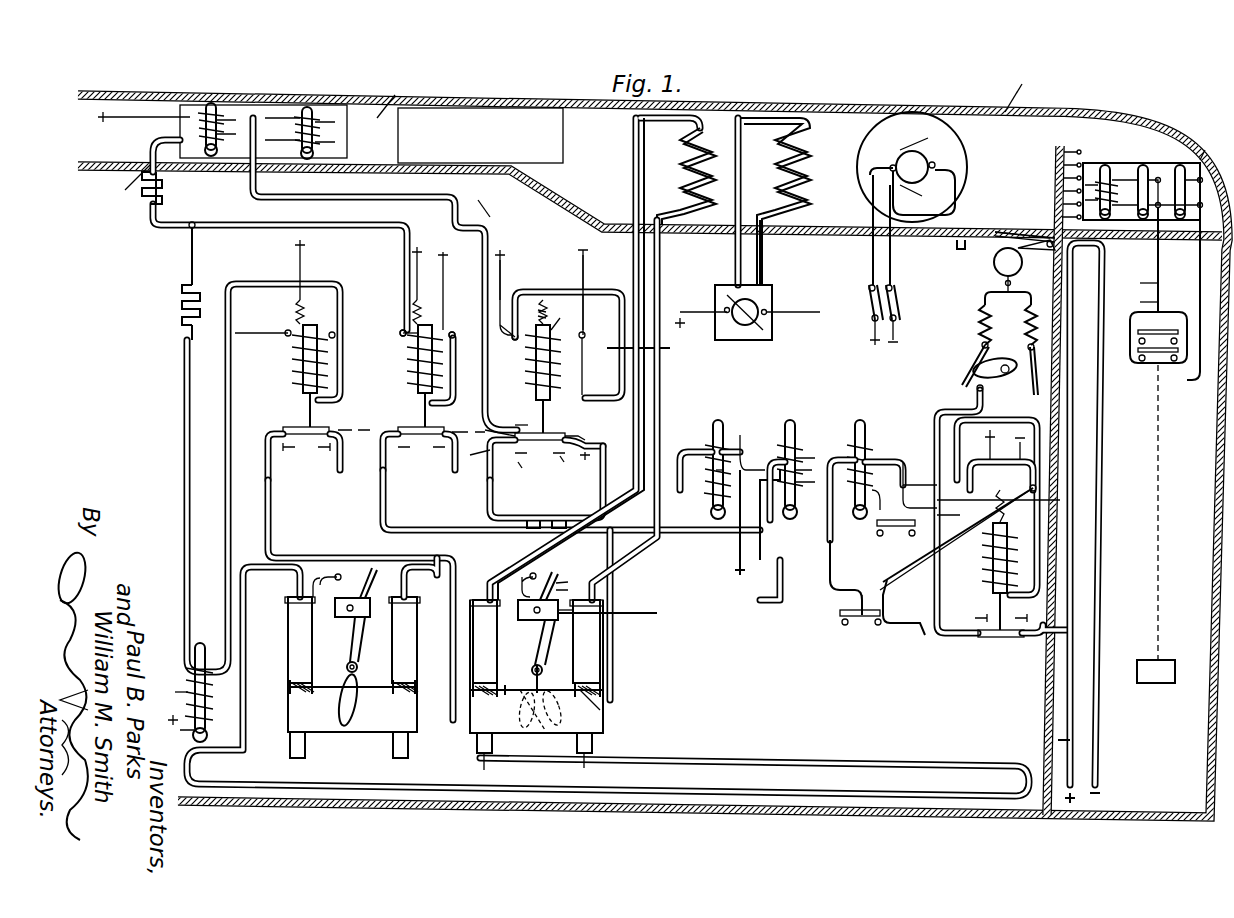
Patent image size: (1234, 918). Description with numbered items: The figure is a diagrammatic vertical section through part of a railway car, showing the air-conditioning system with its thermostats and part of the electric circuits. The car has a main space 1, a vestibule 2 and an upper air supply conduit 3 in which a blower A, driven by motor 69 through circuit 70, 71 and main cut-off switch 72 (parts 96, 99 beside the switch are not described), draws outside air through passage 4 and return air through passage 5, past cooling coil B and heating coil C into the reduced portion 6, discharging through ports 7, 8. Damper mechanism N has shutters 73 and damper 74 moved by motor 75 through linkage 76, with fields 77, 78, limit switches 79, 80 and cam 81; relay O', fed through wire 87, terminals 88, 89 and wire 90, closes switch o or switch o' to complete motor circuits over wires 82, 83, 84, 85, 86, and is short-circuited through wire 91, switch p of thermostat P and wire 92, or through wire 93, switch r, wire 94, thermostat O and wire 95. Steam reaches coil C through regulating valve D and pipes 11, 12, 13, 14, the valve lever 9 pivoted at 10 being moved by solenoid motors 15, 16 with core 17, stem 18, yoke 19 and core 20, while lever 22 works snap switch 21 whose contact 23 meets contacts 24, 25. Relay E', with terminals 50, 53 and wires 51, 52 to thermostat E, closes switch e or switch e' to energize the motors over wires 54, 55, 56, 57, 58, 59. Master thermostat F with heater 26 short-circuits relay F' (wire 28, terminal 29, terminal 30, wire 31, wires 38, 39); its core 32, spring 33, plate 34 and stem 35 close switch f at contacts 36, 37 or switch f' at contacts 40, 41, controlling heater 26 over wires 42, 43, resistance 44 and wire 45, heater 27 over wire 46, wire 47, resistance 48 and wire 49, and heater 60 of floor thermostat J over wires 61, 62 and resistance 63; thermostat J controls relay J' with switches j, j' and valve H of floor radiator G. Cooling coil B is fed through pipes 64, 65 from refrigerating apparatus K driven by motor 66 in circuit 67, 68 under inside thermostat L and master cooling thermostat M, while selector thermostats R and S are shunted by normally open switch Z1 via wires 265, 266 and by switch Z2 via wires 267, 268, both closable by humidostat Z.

The main compartment 1 is at (748, 760).
The end car compartment 2 is at (1152, 780).
The upper air supply conduit 3 is at (1015, 94).
The passage 4 is at (1130, 165).
The passage 5 is at (958, 252).
The reduced portion of the conduit 6 is at (382, 96).
The port 7 is at (418, 110).
The port 8 is at (193, 104).
The lever 9 is at (541, 710).
The pivot 10 is at (552, 677).
The pipe 11 is at (488, 760).
The pipe 12 is at (584, 768).
The pipe 13 is at (634, 128).
The pipe 14 is at (663, 255).
The solenoid motor 15 is at (495, 673).
The solenoid motor 16 is at (586, 641).
The core 17 is at (489, 705).
The stem 18 is at (522, 674).
The yoke 19 is at (543, 722).
The core 20 is at (590, 728).
The snap switch 21 is at (527, 622).
The lever 22 is at (529, 642).
The movable contact member 23 is at (558, 575).
The fixed contact 24 is at (572, 580).
The fixed contact 25 is at (522, 570).
The auxiliary electric heater 26 is at (700, 479).
The heating coil 27 is at (233, 130).
The wire 28 is at (512, 262).
The terminal 29 is at (500, 335).
The terminal 30 is at (596, 325).
The wire 31 is at (585, 280).
The core 32 is at (565, 314).
The spring 33 is at (530, 312).
The movable contact plate 34 is at (475, 463).
The stem 35 is at (525, 428).
The fixed contact 36 is at (512, 472).
The fixed contact 37 is at (563, 470).
The wire 38 is at (560, 282).
The wire 39 is at (690, 512).
The fixed contact 40 is at (499, 416).
The fixed contact 41 is at (574, 434).
The wire 42 is at (738, 560).
The wire 43 is at (490, 490).
The resistance 44 is at (532, 507).
The wire 45 is at (587, 464).
The wire 46 is at (152, 102).
The wire 47 is at (119, 186).
The resistance 48 is at (143, 200).
The wire 49 is at (185, 232).
The terminal 50 is at (400, 333).
The wire 51 is at (248, 193).
The wire 52 is at (482, 199).
The terminal 53 is at (453, 330).
The wire 54 is at (458, 430).
The wire 55 is at (365, 470).
The wire 56 is at (485, 641).
The wire 57 is at (610, 612).
The wire 58 is at (407, 530).
The wire 59 is at (580, 628).
The auxiliary heating element 60 is at (167, 692).
The wire 61 is at (176, 735).
The wire 62 is at (186, 570).
The resistance 63 is at (182, 305).
The pipe 64 is at (727, 263).
The pipe 65 is at (775, 263).
The motor 66 is at (740, 326).
The circuit wire 67 is at (702, 302).
The circuit wire 68 is at (793, 298).
The motor 69 is at (935, 145).
The circuit wire 70 is at (871, 265).
The circuit wire 71 is at (895, 265).
The main cut-off switch 72 is at (898, 300).
The damper 73 is at (1062, 150).
The damper 74 is at (998, 230).
The motor 75 is at (1000, 270).
The link and lever mechanism 76 is at (1037, 269).
The field 77 is at (978, 322).
The field 78 is at (1015, 325).
The limit switch 79 is at (962, 364).
The limit switch 80 is at (1045, 378).
The cam 81 is at (1000, 378).
The wire 82 is at (1036, 742).
The wire 83 is at (975, 648).
The wire 84 is at (985, 295).
The wire 85 is at (1105, 253).
The wire 86 is at (970, 392).
The wire 87 is at (988, 460).
The terminal 88 is at (985, 506).
The terminal 89 is at (1030, 488).
The wire 90 is at (1031, 453).
The wire 91 is at (860, 570).
The wire 92 is at (958, 561).
The wire 93 is at (976, 500).
The wire 94 is at (880, 491).
The wire 95 is at (916, 463).
The terminal 96 is at (872, 333).
The terminal 99 is at (902, 333).
The wire 265 is at (1134, 284).
The wire 266 is at (1134, 303).
The wire 267 is at (1175, 255).
The wire 268 is at (1200, 290).
The fan or blower A is at (879, 124).
The cooling element B is at (812, 195).
The heating element C is at (680, 188).
The regulating valve D is at (595, 700).
The thermostat E is at (171, 129).
The relay E' is at (404, 337).
The master thermostat F is at (722, 469).
The relay F' is at (533, 341).
The auxiliary floor-heat radiator G is at (608, 681).
The valve H is at (348, 740).
The thermostat J is at (197, 676).
The relay J' is at (285, 333).
The refrigerating apparatus K is at (771, 335).
The inside cooling thermostat L is at (798, 450).
The master cooling thermostat M is at (1101, 170).
The damper mechanism N is at (1048, 215).
The thermostat O is at (866, 480).
The relay O' is at (983, 576).
The thermostat P is at (320, 132).
The selector thermostat R is at (1145, 162).
The selector thermostat S is at (1206, 143).
The humidostat Z is at (1152, 689).
The normally open switch Z1 is at (1160, 320).
The normally open switch Z2 is at (1150, 360).
The lower switch e is at (419, 458).
The upper switch e' is at (412, 416).
The switch f is at (546, 462).
The second switch f' is at (540, 421).
The switch j is at (319, 455).
The switch j' is at (296, 413).
The switch o is at (1023, 639).
The switch o' is at (974, 604).
The switch p is at (860, 606).
The switch r is at (896, 534).